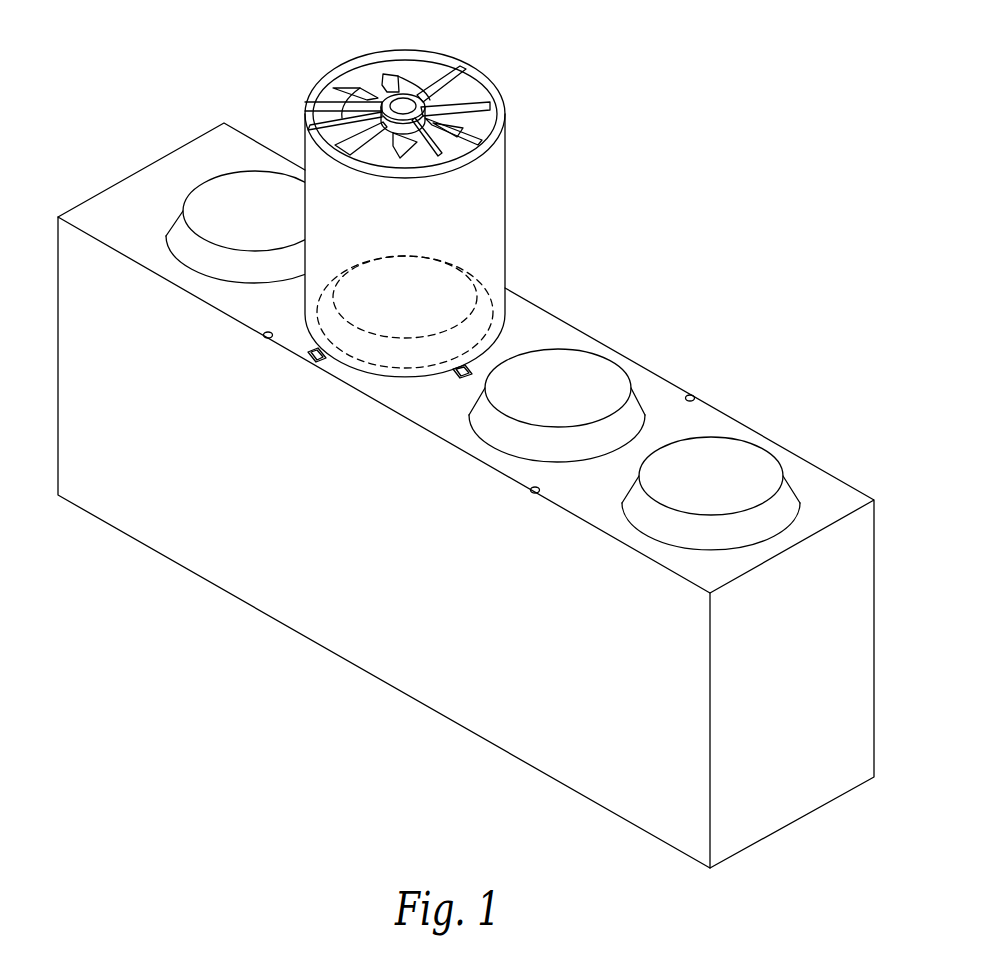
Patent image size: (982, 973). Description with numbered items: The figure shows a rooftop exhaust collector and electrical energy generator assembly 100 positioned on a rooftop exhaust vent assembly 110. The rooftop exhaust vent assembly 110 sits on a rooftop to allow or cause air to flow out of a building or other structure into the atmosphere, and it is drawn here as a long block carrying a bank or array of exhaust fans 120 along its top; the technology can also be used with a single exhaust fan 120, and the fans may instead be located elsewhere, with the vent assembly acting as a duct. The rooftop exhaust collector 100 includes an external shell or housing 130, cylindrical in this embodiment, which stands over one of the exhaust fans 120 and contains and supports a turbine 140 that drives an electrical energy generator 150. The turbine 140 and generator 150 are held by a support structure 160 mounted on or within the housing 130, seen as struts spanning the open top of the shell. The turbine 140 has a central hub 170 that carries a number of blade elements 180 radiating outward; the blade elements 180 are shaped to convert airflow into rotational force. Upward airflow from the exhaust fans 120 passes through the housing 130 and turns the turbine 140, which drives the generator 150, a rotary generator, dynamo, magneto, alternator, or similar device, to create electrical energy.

The rooftop exhaust collector and electrical energy generator assembly 100 is at (542, 113).
The rooftop exhaust vent assembly 110 is at (303, 600).
The exhaust fan 120 is at (208, 190).
The housing 130 is at (505, 261).
The turbine 140 is at (386, 78).
The electrical energy generator 150 is at (404, 104).
The support structure 160 is at (320, 105).
The hub 170 is at (402, 148).
The blade element 180 is at (483, 98).